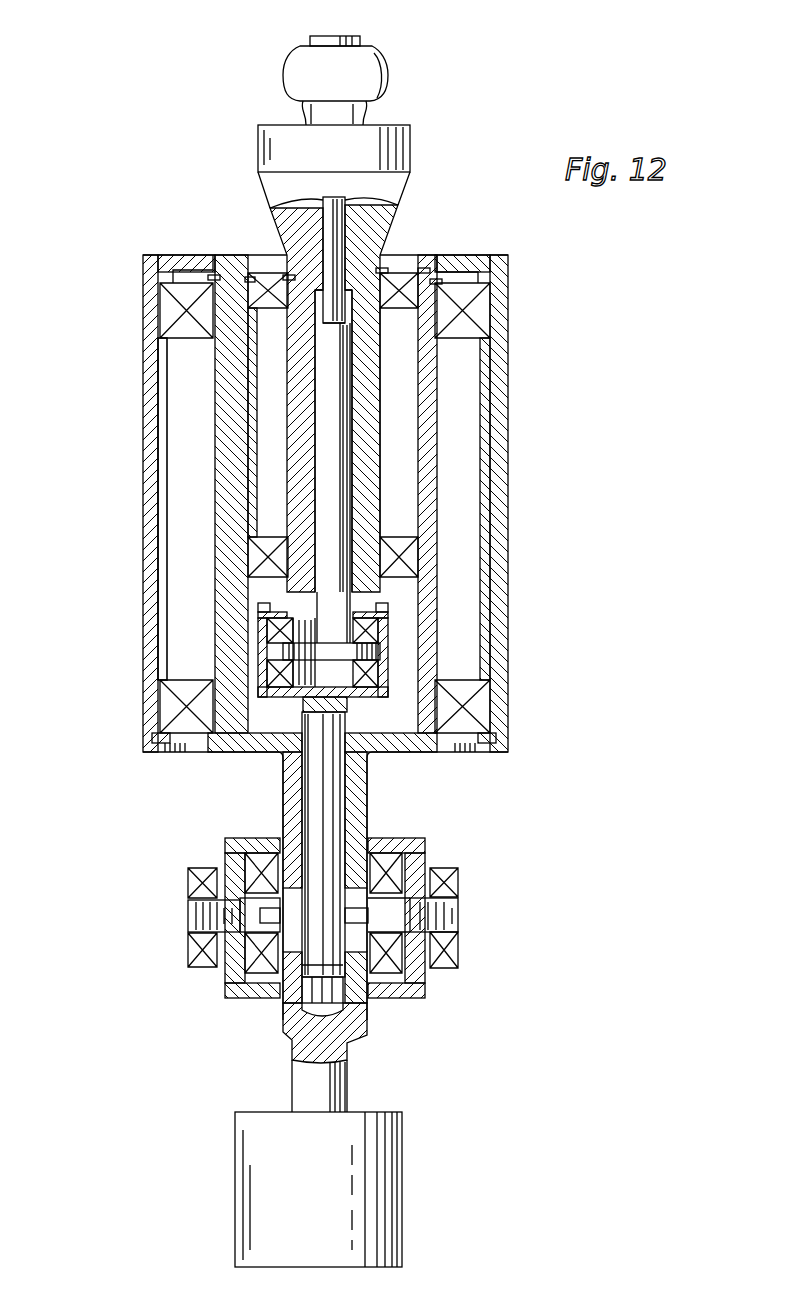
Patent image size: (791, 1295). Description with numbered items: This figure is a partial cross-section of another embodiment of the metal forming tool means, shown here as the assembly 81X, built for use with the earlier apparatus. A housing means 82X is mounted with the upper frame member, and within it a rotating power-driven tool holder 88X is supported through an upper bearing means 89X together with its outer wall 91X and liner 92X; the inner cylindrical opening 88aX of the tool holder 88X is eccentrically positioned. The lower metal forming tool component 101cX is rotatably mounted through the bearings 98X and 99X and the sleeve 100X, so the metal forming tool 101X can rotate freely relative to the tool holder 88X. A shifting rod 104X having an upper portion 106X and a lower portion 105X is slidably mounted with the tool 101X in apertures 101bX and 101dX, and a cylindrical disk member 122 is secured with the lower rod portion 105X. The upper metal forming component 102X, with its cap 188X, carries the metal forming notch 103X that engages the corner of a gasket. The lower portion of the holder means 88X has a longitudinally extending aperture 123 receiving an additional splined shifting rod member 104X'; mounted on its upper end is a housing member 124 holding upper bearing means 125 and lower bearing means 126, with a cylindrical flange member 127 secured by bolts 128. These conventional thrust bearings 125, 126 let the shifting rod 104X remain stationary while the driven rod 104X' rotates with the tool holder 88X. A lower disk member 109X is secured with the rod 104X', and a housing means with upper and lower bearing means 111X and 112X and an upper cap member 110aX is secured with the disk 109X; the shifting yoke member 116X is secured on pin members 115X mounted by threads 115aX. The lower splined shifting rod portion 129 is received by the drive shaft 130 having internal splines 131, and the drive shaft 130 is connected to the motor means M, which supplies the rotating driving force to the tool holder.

The valve assembly 81X is at (258, 104).
The cap 188X is at (362, 41).
The upper metal forming component 102X is at (375, 73).
The metal forming notch 103X is at (380, 116).
The metal forming tool 101X is at (395, 147).
The aperture 101bX is at (322, 224).
The lower metal forming tool component 101cX is at (368, 445).
The aperture 101dX is at (342, 420).
The upper portion 106X is at (333, 215).
The shifting rod 104X is at (450, 441).
The lower portion 105X is at (340, 498).
The bearing 98X is at (290, 260).
The outer wall 91X is at (165, 450).
The housing means 82X is at (498, 523).
The liner plate 92X is at (175, 425).
The sleeve 100X is at (250, 388).
The rotating power-driven tool holder 88X is at (428, 472).
The inner cylindrical opening 88aX is at (263, 362).
The upper bearing means 89X is at (175, 312).
The bearing 99X is at (260, 556).
The bolts 128 is at (388, 607).
The cylindrical flange member 127 is at (388, 615).
The housing member 124 is at (390, 632).
The upper bearing means 125 is at (275, 631).
The lower bearing means 126 is at (275, 672).
The cylindrical disk member 122 is at (275, 650).
The splined shifting rod member 104X' is at (266, 877).
The longitudinally extending aperture 123 is at (330, 797).
The lower splined shifting rod portion 129 is at (318, 964).
The internal splines 131 is at (345, 1000).
The drive shaft 130 is at (352, 1022).
The upper cap member 110aX is at (427, 836).
The upper bearing means 111X is at (398, 868).
The lower bearing means 112X is at (393, 952).
The shifting yoke member 116X is at (458, 878).
The lower disk member 109X is at (200, 910).
The threads 115aX is at (430, 911).
The pin members 115X is at (448, 916).
The motor means M is at (323, 1197).